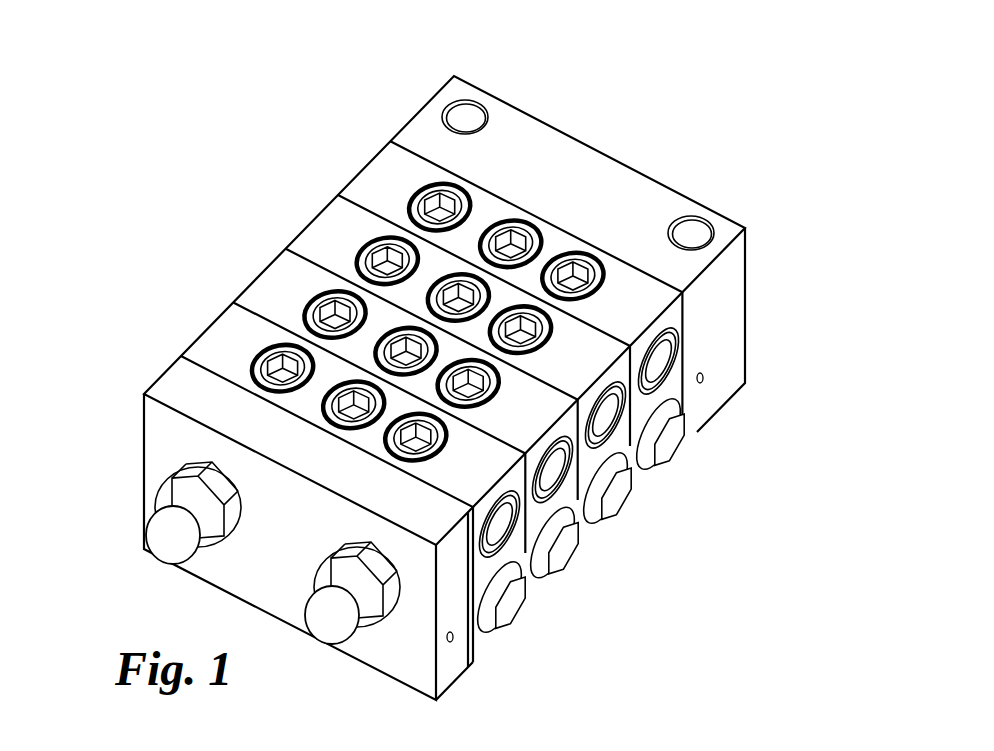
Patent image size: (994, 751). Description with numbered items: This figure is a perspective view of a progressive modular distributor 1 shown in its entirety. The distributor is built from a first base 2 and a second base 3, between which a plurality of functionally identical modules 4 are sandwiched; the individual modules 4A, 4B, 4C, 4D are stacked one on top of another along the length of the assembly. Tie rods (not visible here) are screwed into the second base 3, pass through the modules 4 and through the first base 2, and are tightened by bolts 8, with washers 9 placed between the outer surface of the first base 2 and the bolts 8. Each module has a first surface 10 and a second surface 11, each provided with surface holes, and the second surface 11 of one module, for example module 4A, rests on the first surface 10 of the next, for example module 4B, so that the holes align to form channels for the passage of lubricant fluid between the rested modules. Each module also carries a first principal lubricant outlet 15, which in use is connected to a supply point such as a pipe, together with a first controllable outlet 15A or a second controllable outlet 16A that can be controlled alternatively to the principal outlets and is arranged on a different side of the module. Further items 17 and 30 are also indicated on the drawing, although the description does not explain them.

The progressive modular distributor 1 is at (797, 180).
The first base 2 is at (175, 385).
The second base 3 is at (423, 126).
The modules 4 is at (275, 13).
The module 4A is at (213, 337).
The module 4B is at (273, 288).
The module 4C is at (328, 233).
The module 4D is at (378, 177).
The bolts 8 is at (317, 612).
The washers 9 is at (362, 548).
The first surface 10 is at (492, 520).
The second surface 11 is at (490, 510).
The first principal lubricant outlet 15 is at (660, 355).
The first controllable outlet 15A is at (568, 272).
The second controllable outlet 16A is at (452, 208).
The screw 17 is at (473, 290).
The cartridge 30 is at (508, 595).